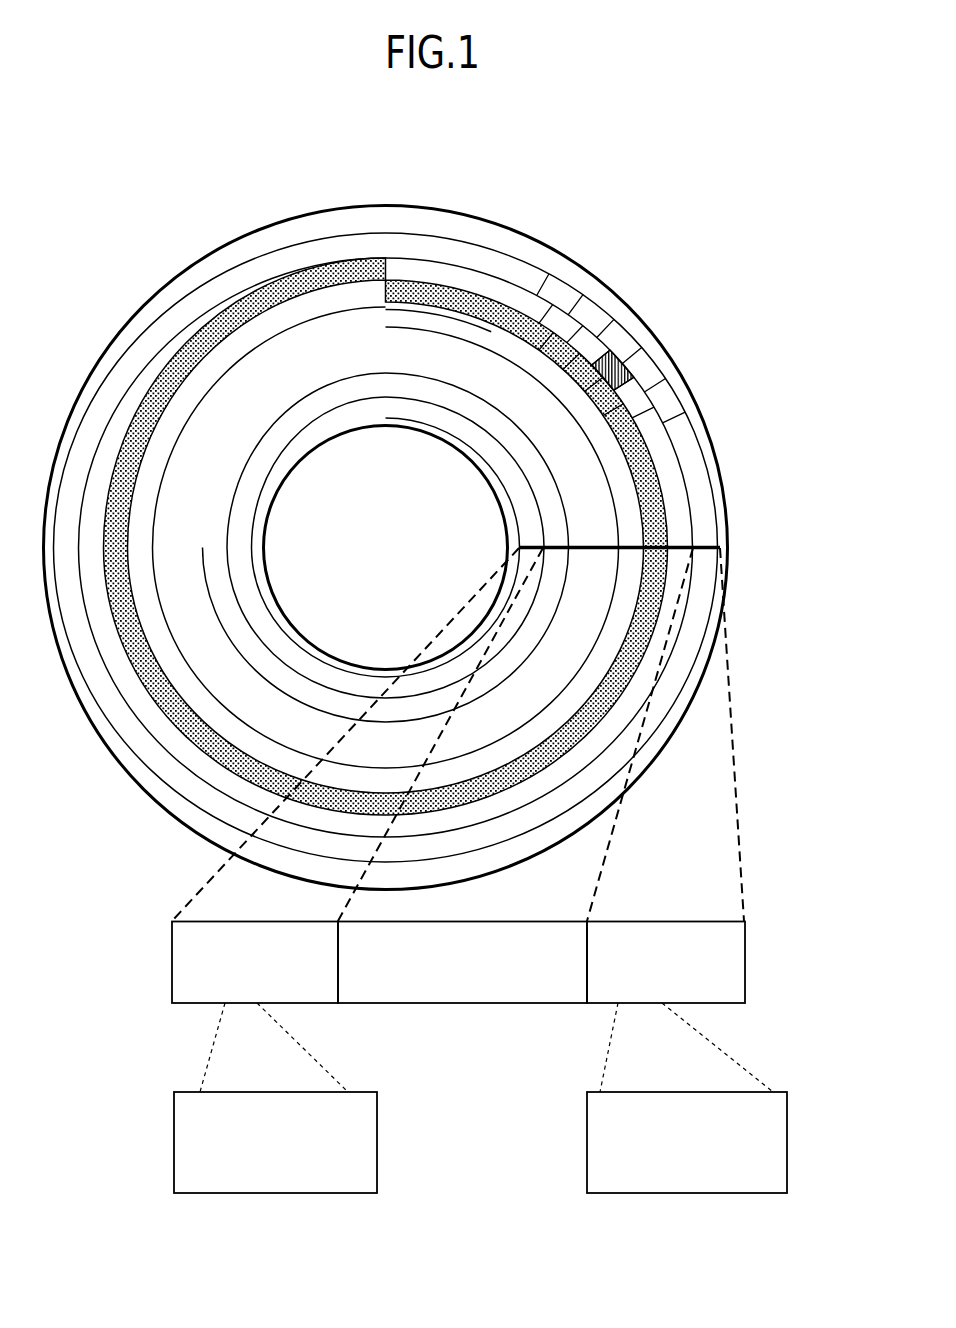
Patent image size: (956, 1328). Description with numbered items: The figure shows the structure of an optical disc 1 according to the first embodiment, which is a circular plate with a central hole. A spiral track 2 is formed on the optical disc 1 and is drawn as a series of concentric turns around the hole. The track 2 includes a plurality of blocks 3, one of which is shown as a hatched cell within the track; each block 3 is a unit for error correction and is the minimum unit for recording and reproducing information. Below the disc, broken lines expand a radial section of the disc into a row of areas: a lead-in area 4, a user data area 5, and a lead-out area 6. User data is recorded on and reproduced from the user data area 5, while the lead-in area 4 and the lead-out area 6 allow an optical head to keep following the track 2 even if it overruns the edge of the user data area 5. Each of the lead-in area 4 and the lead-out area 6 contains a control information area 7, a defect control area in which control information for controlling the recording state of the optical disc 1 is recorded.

The optical disc 1 is at (232, 410).
The spiral track 2 is at (517, 323).
The block 3 is at (610, 367).
The lead-in area 4 is at (255, 921).
The user data area 5 is at (482, 921).
The lead-out area 6 is at (670, 921).
The control information area 7 is at (247, 1091).